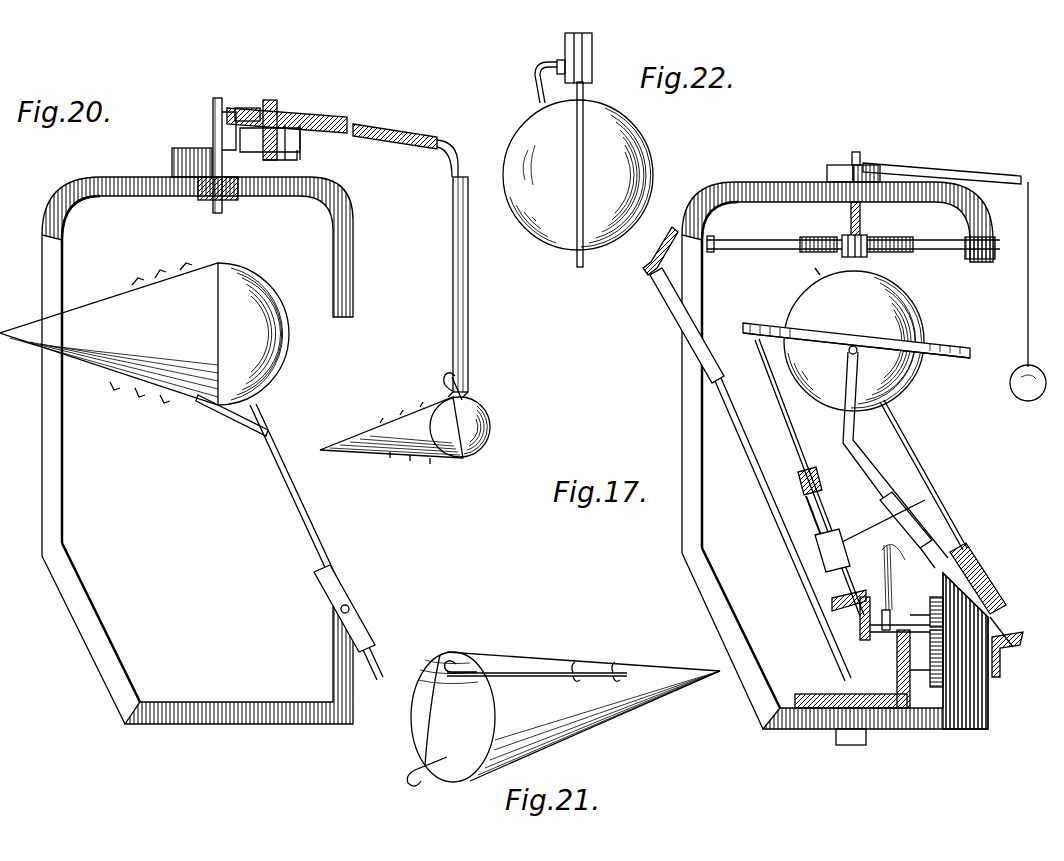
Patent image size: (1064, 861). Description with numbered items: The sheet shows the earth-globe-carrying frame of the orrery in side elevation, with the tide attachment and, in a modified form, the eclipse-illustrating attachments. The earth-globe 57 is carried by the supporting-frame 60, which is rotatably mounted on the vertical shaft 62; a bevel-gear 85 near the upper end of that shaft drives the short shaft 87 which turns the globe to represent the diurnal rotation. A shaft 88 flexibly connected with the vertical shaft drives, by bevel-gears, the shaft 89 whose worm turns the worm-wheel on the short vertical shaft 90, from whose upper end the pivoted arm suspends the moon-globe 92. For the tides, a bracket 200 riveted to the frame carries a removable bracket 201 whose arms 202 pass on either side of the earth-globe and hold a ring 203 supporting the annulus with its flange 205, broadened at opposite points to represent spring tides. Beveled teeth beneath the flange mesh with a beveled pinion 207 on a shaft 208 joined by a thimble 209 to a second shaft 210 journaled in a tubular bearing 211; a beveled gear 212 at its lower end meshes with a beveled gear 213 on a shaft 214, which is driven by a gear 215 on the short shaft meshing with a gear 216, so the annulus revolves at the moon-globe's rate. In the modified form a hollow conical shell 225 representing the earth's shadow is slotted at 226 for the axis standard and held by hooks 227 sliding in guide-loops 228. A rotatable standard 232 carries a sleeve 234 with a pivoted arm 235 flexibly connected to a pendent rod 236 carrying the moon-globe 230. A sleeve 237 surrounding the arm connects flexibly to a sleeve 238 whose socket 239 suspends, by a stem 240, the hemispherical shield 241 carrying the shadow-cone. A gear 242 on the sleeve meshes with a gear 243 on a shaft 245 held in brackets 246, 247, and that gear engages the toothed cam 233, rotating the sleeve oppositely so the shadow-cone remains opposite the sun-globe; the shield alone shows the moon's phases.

In FIG. 20, the earth-globe 57 is at (290, 348).
In FIG. 17, the earth-globe 57 is at (920, 308).
In FIG. 20, the supporting-frame 60 is at (100, 633).
In FIG. 17, the supporting-frame 60 is at (940, 729).
In FIG. 17, the vertical shaft 62 is at (848, 746).
In FIG. 17, the bevel-gear 85 is at (818, 695).
In FIG. 17, the short shaft 87 is at (1000, 668).
In FIG. 17, the shaft 88 is at (772, 527).
In FIG. 17, the shaft 89 is at (745, 249).
In FIG. 17, the short vertical shaft 90 is at (850, 215).
In FIG. 17, the moon-globe 92 is at (1012, 393).
In FIG. 17, the bracket 200 is at (960, 578).
In FIG. 17, the bracket 201 is at (905, 485).
In FIG. 17, the arms 202 is at (845, 418).
In FIG. 17, the ring 203 is at (935, 356).
In FIG. 17, the flange 205 is at (965, 348).
In FIG. 17, the beveled pinion 207 is at (755, 333).
In FIG. 17, the shaft 208 is at (712, 380).
In FIG. 17, the thimble 209 is at (805, 472).
In FIG. 17, the second shaft 210 is at (824, 507).
In FIG. 17, the tubular bearing 211 is at (828, 553).
In FIG. 17, the beveled gear 212 is at (866, 598).
In FIG. 17, the beveled gear 213 is at (863, 612).
In FIG. 17, the shaft 214 is at (890, 615).
In FIG. 17, the gear 215 is at (937, 687).
In FIG. 17, the gear 216 is at (945, 603).
In FIG. 20, the hollow conical shell 225 is at (109, 334).
In FIG. 21, the hollow conical shell 225 is at (565, 717).
In FIG. 21, the slot 226 is at (477, 670).
In FIG. 20, the hooks 227 is at (218, 425).
In FIG. 21, the hooks 227 is at (445, 665).
In FIG. 20, the guide-loops 228 is at (135, 278).
In FIG. 21, the guide-loops 228 is at (580, 670).
In FIG. 20, the moon-globe 230 is at (492, 425).
In FIG. 22, the moon-globe 230 is at (625, 160).
In FIG. 20, the rotatable standard 232 is at (222, 212).
In FIG. 20, the cam 233 is at (172, 160).
In FIG. 20, the sleeve 234 is at (213, 110).
In FIG. 20, the arm 235 is at (247, 108).
In FIG. 20, the pendent rod 236 is at (465, 400).
In FIG. 22, the pendent rod 236 is at (584, 90).
In FIG. 20, the sleeve 237 is at (350, 112).
In FIG. 20, the sleeve 238 is at (455, 197).
In FIG. 22, the sleeve 238 is at (592, 50).
In FIG. 20, the socket 239 is at (450, 380).
In FIG. 22, the socket 239 is at (559, 62).
In FIG. 20, the stem 240 is at (440, 385).
In FIG. 22, the stem 240 is at (537, 70).
In FIG. 22, the hemispherical shield 241 is at (525, 152).
In FIG. 20, the gear 242 is at (275, 105).
In FIG. 20, the gear 243 is at (275, 160).
In FIG. 20, the shaft 245 is at (300, 148).
In FIG. 20, the bracket 246 is at (235, 130).
In FIG. 20, the bracket 247 is at (300, 142).